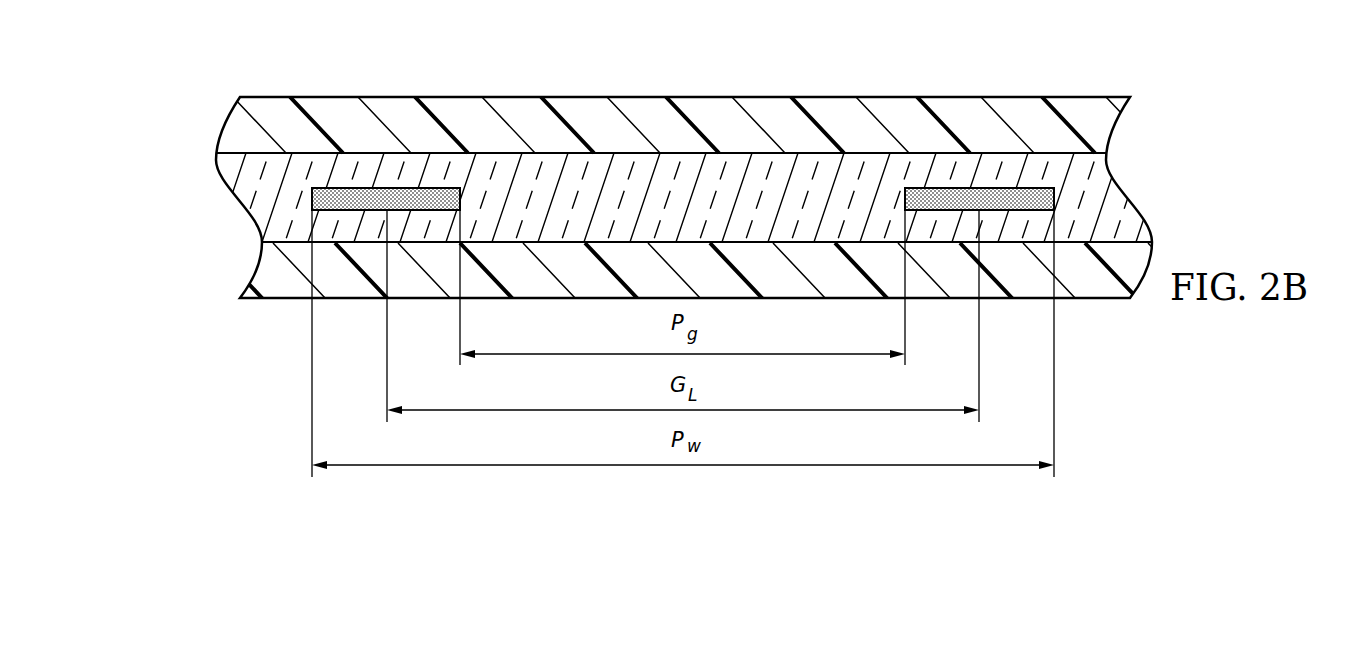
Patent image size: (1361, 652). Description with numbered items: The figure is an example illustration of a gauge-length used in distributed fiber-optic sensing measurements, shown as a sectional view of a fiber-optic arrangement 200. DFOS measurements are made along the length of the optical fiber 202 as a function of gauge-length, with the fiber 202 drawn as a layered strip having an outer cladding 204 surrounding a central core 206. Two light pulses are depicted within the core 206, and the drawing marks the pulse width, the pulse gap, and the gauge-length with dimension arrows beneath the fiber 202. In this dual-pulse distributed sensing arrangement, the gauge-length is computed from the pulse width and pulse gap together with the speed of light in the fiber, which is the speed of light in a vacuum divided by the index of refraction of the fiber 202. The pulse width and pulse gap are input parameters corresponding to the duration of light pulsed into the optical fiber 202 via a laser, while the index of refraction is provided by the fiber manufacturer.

The optical fiber assembly 200 is at (1217, 114).
The optical fiber 202 is at (619, 86).
The cladding 204 is at (228, 126).
The core 206 is at (258, 222).